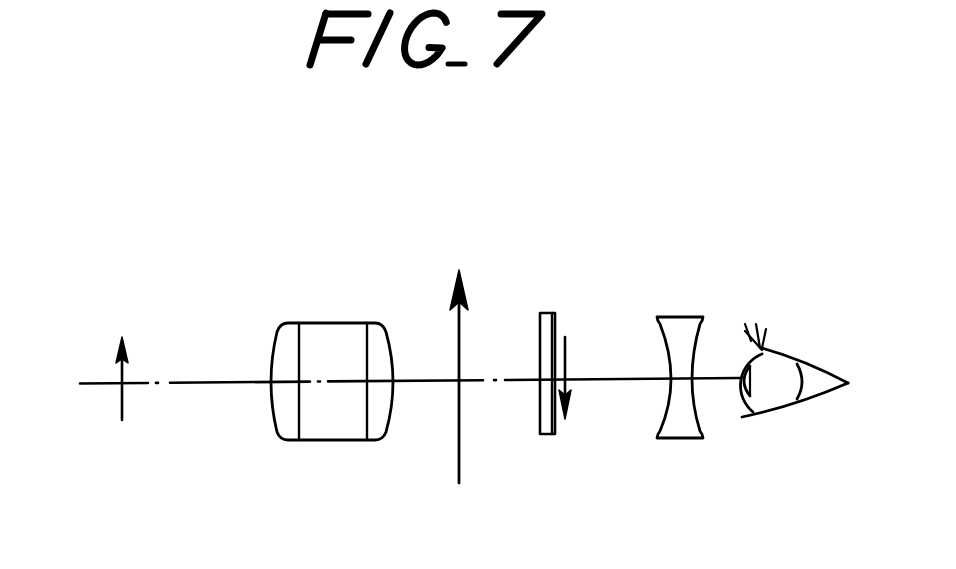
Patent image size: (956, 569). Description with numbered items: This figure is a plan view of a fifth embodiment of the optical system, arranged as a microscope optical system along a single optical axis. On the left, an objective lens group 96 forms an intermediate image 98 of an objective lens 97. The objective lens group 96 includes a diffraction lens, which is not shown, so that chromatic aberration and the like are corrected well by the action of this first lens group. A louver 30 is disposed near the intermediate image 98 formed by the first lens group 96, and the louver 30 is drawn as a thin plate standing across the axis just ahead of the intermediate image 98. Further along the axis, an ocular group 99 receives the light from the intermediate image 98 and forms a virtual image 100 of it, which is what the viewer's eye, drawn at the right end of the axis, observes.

The objective lens 97 is at (122, 404).
The objective lens group 96 is at (333, 323).
The virtual image 100 is at (459, 455).
The louver 30 is at (548, 313).
The intermediate image 98 is at (566, 352).
The ocular group 99 is at (686, 317).